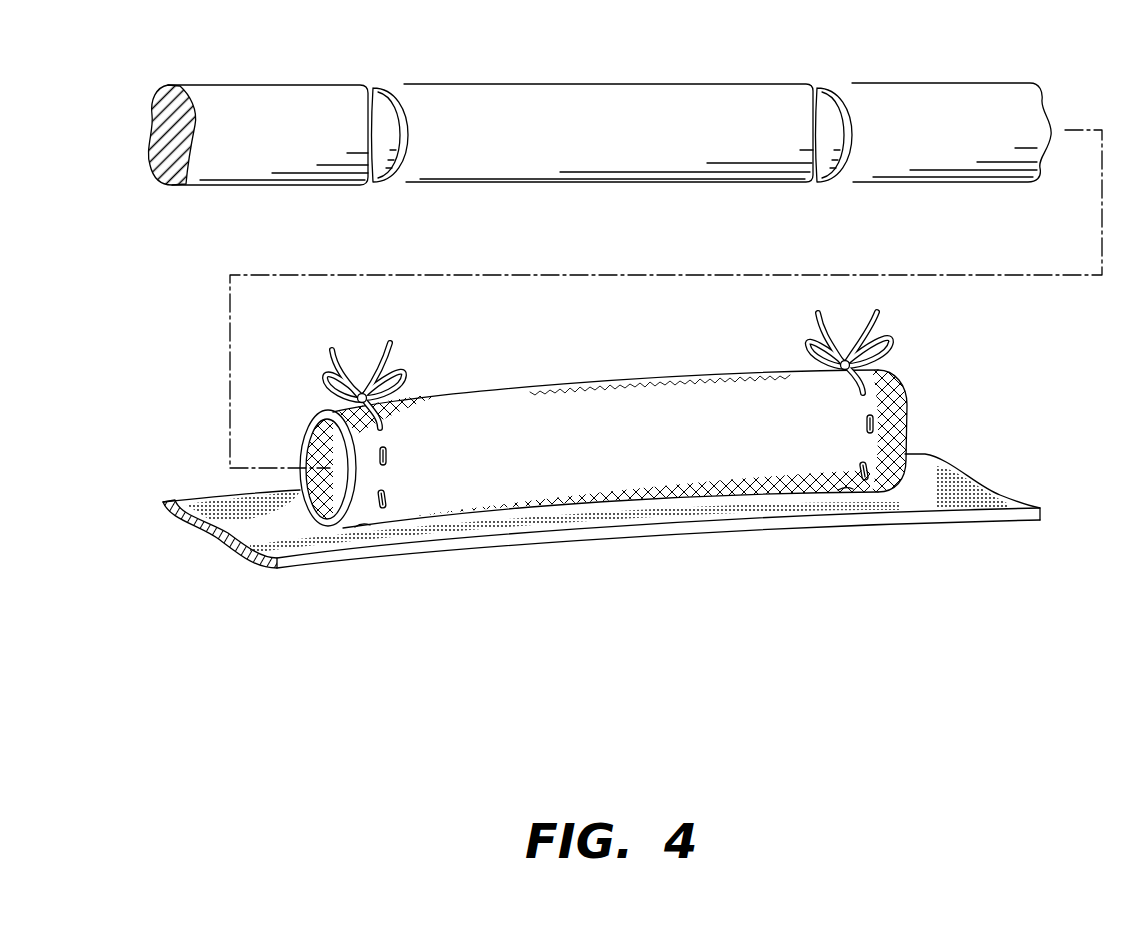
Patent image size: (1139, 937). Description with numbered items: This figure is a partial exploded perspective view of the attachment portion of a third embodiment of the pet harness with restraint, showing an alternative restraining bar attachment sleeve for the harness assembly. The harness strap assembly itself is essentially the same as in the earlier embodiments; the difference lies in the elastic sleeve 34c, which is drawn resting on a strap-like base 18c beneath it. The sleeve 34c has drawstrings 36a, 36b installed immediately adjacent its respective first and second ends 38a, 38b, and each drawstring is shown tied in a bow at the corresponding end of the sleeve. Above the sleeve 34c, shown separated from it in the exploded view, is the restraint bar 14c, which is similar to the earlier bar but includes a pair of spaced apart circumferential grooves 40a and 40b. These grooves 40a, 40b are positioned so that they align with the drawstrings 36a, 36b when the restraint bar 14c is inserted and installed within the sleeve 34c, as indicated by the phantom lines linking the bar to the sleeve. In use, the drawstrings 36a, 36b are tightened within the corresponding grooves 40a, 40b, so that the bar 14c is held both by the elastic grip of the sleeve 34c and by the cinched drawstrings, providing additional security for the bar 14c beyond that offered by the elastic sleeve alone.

The restraint bar 14c is at (484, 85).
The circumferential groove 40a is at (379, 94).
The circumferential groove 40b is at (826, 92).
The elastic sleeve 34c is at (546, 382).
The drawstring 36a is at (336, 352).
The drawstring 36b is at (817, 337).
The first end 38a is at (303, 427).
The second end 38b is at (907, 393).
The base plate 18c is at (597, 537).